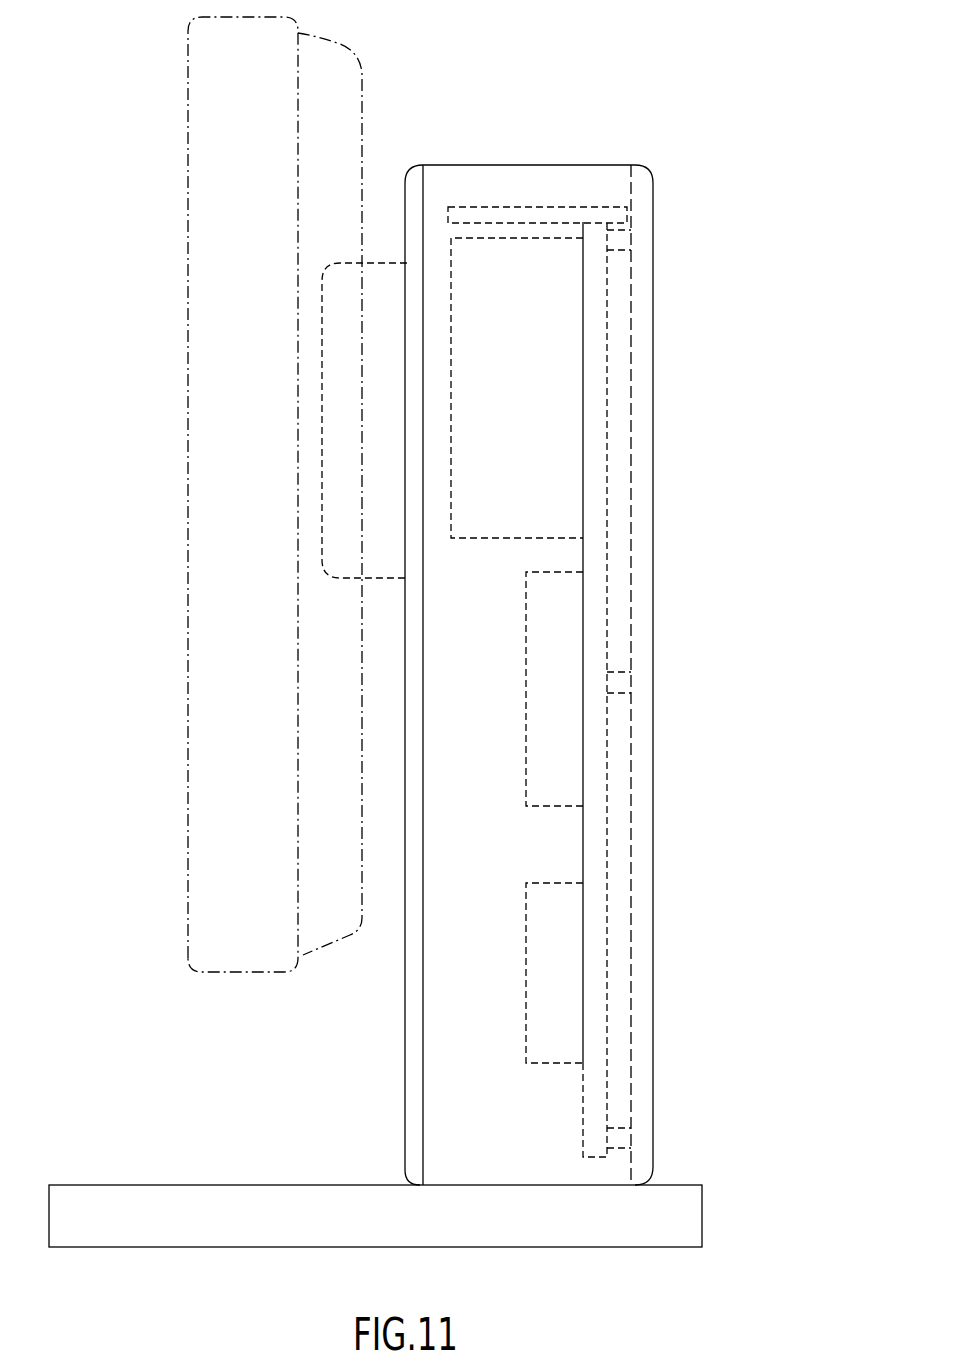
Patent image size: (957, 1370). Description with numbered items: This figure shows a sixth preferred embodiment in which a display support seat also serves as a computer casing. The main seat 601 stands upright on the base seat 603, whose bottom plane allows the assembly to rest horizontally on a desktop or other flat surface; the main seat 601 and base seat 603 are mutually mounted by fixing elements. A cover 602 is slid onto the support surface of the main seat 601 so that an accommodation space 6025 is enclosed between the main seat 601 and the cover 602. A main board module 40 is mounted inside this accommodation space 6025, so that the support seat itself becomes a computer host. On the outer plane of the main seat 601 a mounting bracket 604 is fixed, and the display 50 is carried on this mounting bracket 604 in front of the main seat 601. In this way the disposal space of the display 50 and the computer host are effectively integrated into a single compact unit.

The display 50 is at (206, 800).
The mounting bracket 604 is at (388, 313).
The main seat 601 is at (412, 696).
The accommodation space 6025 is at (489, 851).
The main board module 40 is at (618, 482).
The cover 602 is at (643, 652).
The base seat 603 is at (313, 1210).